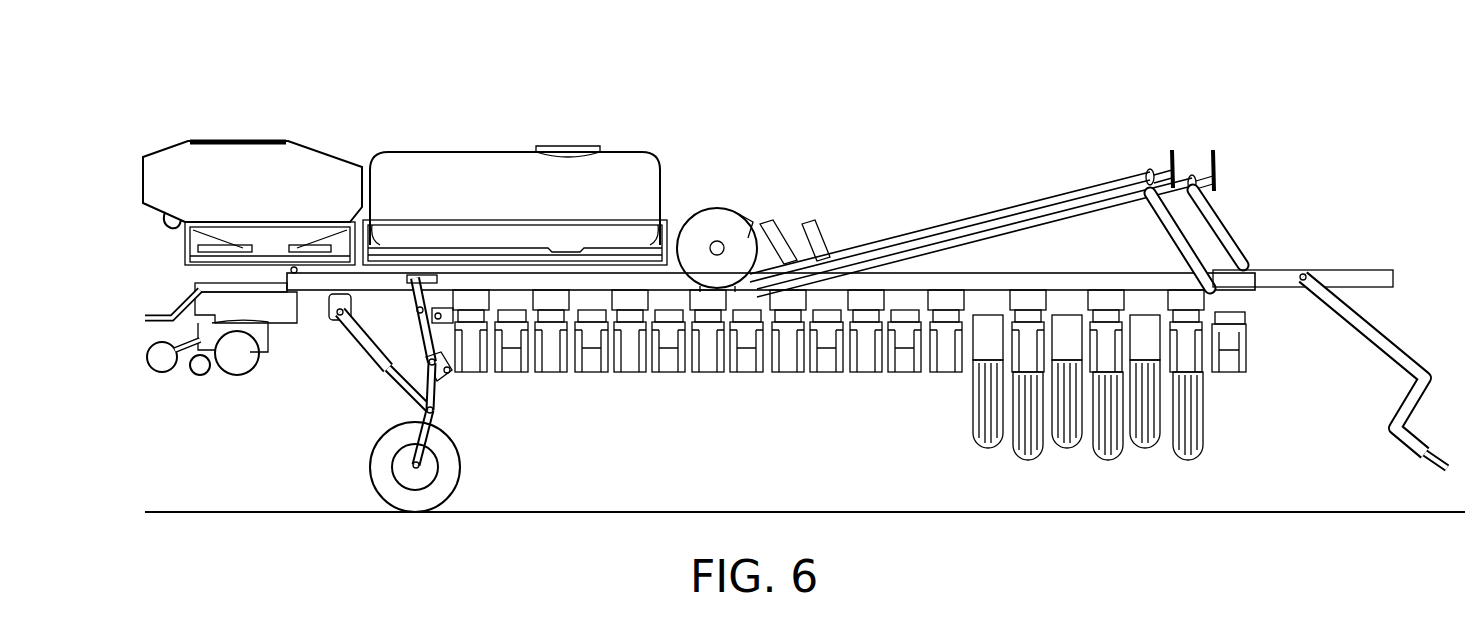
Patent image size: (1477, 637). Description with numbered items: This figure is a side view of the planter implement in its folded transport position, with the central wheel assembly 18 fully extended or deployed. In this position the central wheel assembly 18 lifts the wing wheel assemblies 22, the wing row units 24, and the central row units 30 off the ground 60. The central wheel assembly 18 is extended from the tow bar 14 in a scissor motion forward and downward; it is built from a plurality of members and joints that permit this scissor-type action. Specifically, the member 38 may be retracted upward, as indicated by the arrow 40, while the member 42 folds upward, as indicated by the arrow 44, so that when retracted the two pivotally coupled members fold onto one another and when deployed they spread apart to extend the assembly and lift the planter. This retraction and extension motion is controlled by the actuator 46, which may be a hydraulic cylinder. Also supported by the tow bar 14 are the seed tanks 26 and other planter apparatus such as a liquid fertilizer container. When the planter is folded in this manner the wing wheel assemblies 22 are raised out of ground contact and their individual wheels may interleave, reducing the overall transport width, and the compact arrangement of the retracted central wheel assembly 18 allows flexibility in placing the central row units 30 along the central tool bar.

The tow bar 14 is at (1280, 275).
The central wheel assembly 18 is at (393, 442).
The wing wheel assemblies 22 is at (1034, 464).
The wing row units 24 is at (670, 382).
The seed tanks 26 is at (178, 160).
The central row units 30 is at (136, 333).
The member 38 is at (448, 377).
The arrow 40 is at (401, 370).
The member 42 is at (412, 343).
The arrow 44 is at (450, 328).
The actuator 46 is at (372, 352).
The ground 60 is at (260, 512).